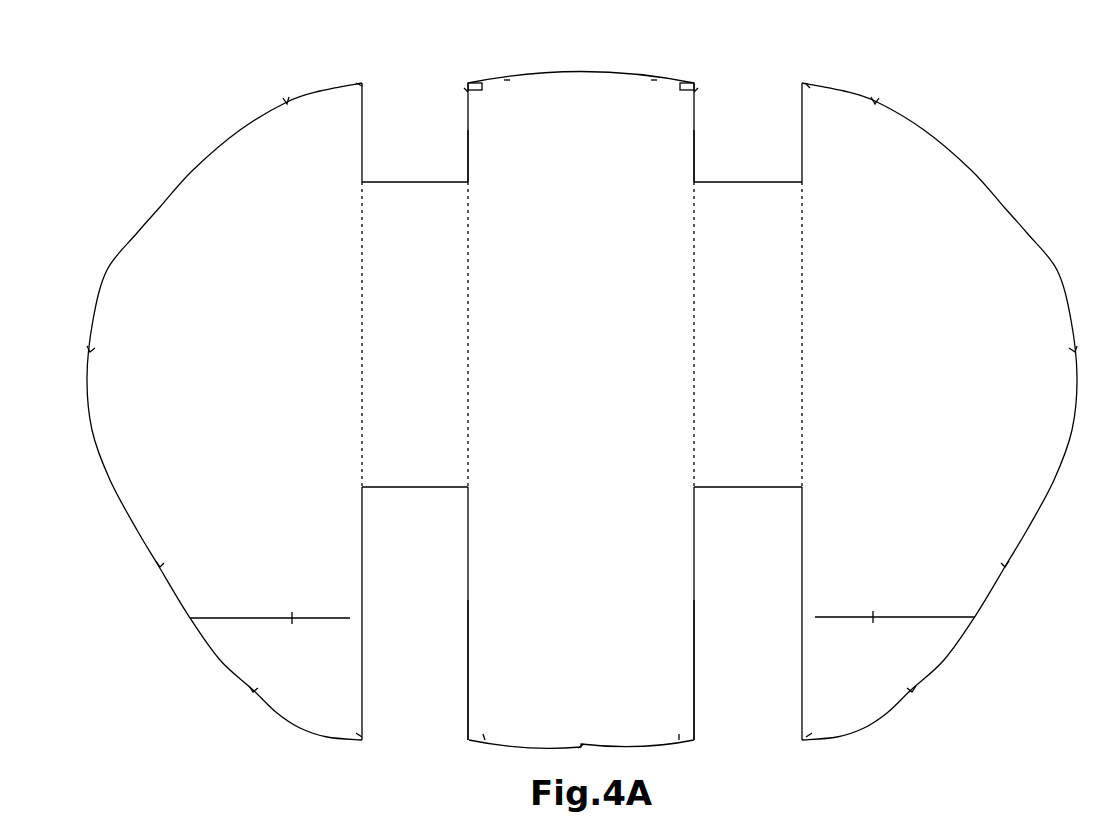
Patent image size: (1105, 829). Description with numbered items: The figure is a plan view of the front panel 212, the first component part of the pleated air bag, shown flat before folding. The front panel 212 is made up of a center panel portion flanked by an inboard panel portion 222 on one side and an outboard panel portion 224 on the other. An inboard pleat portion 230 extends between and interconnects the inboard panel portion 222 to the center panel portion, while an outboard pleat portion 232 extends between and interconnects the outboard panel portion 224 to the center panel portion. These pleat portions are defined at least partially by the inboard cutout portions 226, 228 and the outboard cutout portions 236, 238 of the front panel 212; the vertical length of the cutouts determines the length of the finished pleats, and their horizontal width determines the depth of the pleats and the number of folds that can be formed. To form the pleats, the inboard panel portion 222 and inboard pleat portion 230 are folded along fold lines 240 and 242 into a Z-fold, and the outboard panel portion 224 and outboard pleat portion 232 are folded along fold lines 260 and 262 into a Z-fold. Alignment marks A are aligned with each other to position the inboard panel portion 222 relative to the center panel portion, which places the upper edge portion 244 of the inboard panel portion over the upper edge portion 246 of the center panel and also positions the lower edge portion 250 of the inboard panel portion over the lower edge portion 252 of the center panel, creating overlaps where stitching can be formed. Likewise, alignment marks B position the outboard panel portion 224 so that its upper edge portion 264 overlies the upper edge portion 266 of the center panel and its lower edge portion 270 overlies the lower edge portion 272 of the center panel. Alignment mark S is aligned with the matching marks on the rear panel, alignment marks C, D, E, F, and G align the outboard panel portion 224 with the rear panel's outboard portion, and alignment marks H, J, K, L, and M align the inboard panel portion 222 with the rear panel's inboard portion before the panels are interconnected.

The front panel 212 is at (160, 130).
The inboard panel portion 222 is at (185, 262).
The outboard panel portion 224 is at (978, 262).
The inboard cutout portion 226 is at (423, 148).
The inboard cutout portion 228 is at (420, 642).
The inboard pleat portion 230 is at (400, 352).
The outboard pleat portion 232 is at (765, 352).
The outboard cutout portion 236 is at (738, 148).
The outboard cutout portion 238 is at (745, 642).
The fold line 240 is at (362, 262).
The fold line 242 is at (469, 283).
The upper edge portion of inboard panel portion 244 is at (362, 148).
The upper edge portion of center panel 246 is at (468, 122).
The lower edge portion of inboard panel portion 250 is at (362, 570).
The lower inner left edge 252 is at (468, 570).
The fold line 260 is at (802, 262).
The fold line 262 is at (694, 283).
The upper edge portion of outboard panel portion 264 is at (802, 147).
The upper edge portion of center panel 266 is at (692, 137).
The lower edge portion of outboard panel portion 270 is at (802, 570).
The lower edge portion of center panel 272 is at (695, 570).
The alignment mark A is at (360, 83).
The alignment mark B is at (694, 88).
The alignment mark C is at (912, 690).
The alignment mark D is at (1005, 565).
The alignment mark E is at (1075, 350).
The alignment mark F is at (875, 102).
The alignment mark G is at (654, 80).
The alignment mark H is at (253, 690).
The alignment mark J is at (160, 565).
The alignment mark K is at (90, 350).
The alignment mark L is at (287, 102).
The alignment mark M is at (507, 80).
The alignment mark S is at (582, 745).